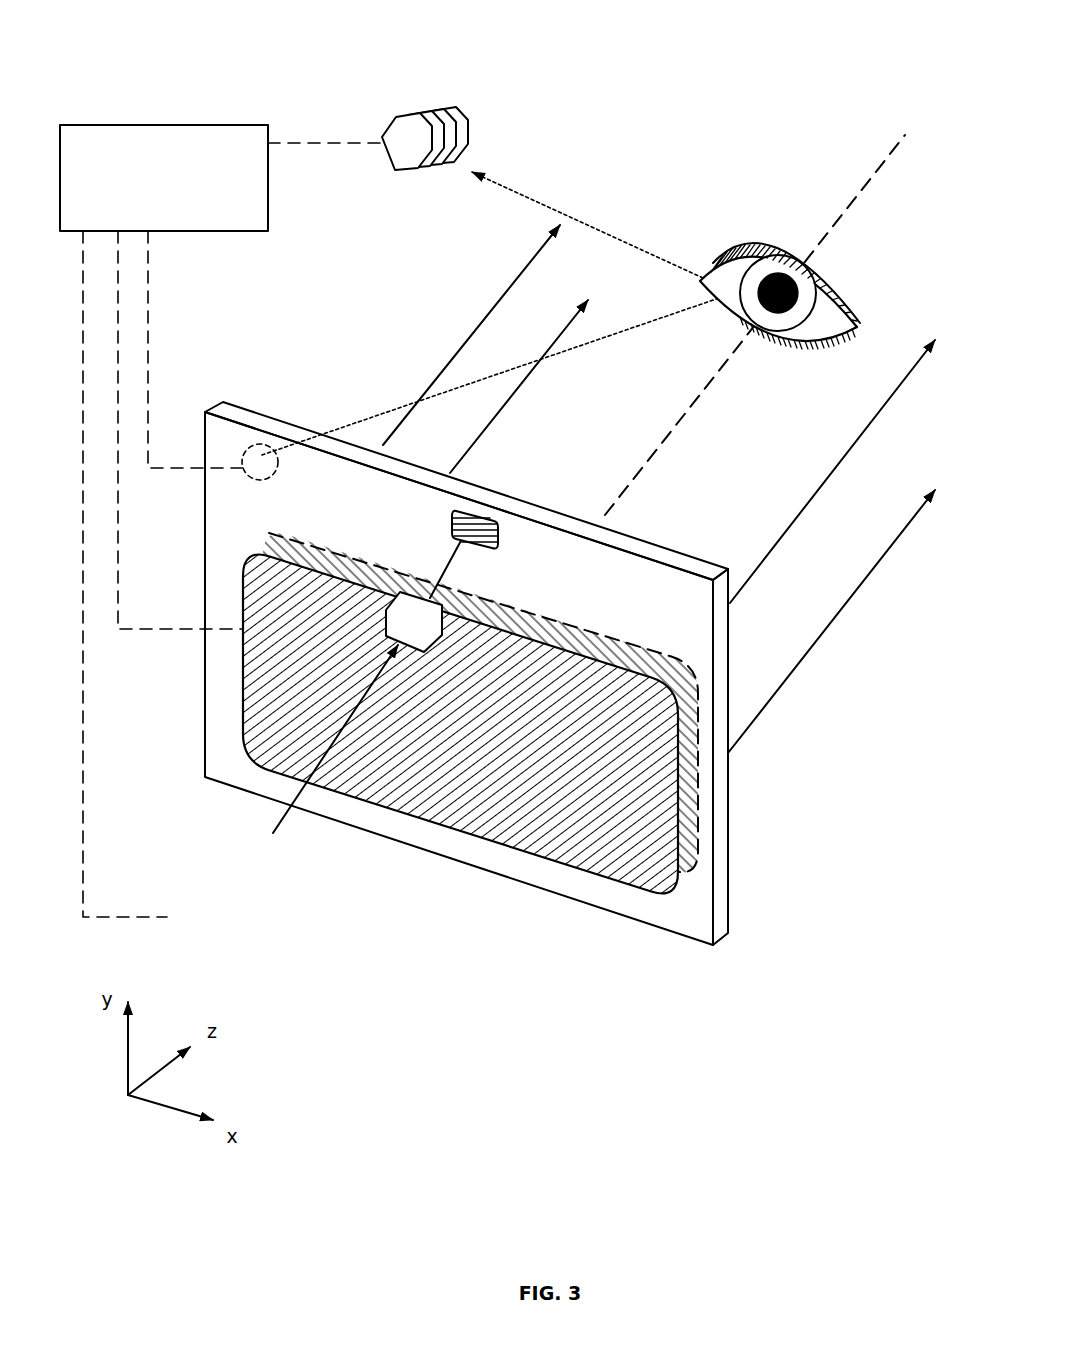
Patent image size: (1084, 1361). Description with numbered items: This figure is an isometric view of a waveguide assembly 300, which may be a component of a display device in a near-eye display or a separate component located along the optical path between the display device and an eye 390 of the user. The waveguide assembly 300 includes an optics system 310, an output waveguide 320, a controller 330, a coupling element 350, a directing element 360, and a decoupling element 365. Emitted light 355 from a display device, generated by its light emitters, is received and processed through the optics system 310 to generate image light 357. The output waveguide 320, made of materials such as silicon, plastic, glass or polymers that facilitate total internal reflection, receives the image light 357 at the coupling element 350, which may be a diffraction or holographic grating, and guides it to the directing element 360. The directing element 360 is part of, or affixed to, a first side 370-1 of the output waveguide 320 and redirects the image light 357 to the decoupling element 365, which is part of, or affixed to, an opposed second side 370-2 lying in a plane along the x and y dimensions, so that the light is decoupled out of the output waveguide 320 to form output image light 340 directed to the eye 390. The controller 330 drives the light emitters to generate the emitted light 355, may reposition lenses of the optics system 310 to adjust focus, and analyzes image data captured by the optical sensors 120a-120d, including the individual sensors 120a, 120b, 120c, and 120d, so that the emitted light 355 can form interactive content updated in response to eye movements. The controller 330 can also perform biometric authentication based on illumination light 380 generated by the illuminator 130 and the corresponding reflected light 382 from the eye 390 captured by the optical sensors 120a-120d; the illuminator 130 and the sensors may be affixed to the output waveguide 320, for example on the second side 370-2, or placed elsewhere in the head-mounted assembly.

The waveguide assembly 300 is at (248, 80).
The controller 330 is at (223, 521).
The optical sensors 120a-120d is at (415, 108).
The optical sensor 120a is at (407, 141).
The optical sensor 120b is at (419, 139).
The optical sensor 120c is at (431, 137).
The optical sensor 120d is at (443, 135).
The output waveguide 320 is at (728, 782).
The first side 370-1 is at (700, 918).
The second side 370-2 is at (728, 835).
The decoupling element 365 is at (692, 857).
The directing element 360 is at (242, 688).
The illuminator 130 is at (246, 446).
The illumination light 380 is at (367, 417).
The output image light 340 is at (518, 285).
The emitted light 355 is at (294, 796).
The optics system 310 is at (413, 623).
The image light 357 is at (443, 562).
The coupling element 350 is at (472, 524).
The reflected light 382 is at (601, 237).
The eye 390 is at (755, 325).